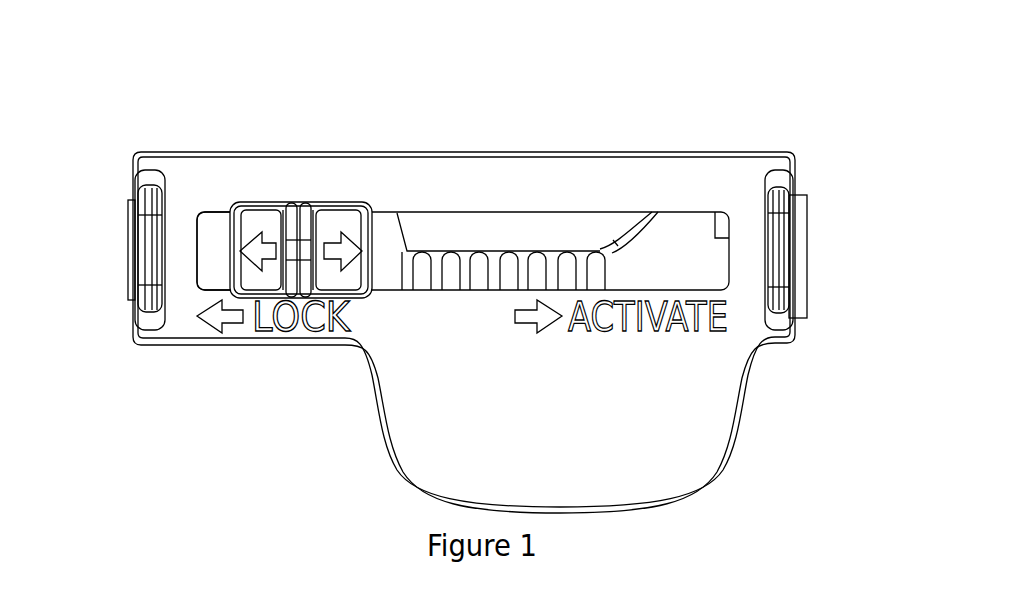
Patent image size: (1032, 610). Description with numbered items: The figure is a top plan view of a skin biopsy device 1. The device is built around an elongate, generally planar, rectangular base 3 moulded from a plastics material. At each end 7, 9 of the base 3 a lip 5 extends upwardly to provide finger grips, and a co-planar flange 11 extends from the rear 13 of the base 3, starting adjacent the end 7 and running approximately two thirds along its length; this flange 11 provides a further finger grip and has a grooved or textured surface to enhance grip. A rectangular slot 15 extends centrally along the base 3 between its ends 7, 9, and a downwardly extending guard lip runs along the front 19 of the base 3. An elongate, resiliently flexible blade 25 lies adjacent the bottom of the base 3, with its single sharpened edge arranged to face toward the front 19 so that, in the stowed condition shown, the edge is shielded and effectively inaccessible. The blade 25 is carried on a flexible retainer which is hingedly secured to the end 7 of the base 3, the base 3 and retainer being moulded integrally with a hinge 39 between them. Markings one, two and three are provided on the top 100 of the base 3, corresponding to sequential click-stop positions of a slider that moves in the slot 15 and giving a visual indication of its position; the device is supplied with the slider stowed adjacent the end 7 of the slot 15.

The skin biopsy device 1 is at (769, 90).
The base 3 is at (722, 187).
The lip 5 is at (148, 242).
The end 7 is at (799, 146).
The end 9 is at (113, 171).
The flange 11 is at (707, 417).
The rear 13 is at (260, 354).
The slot 15 is at (213, 237).
The front 19 is at (428, 130).
The blade 25 is at (488, 244).
The hinge 39 is at (797, 277).
The top 100 is at (553, 160).